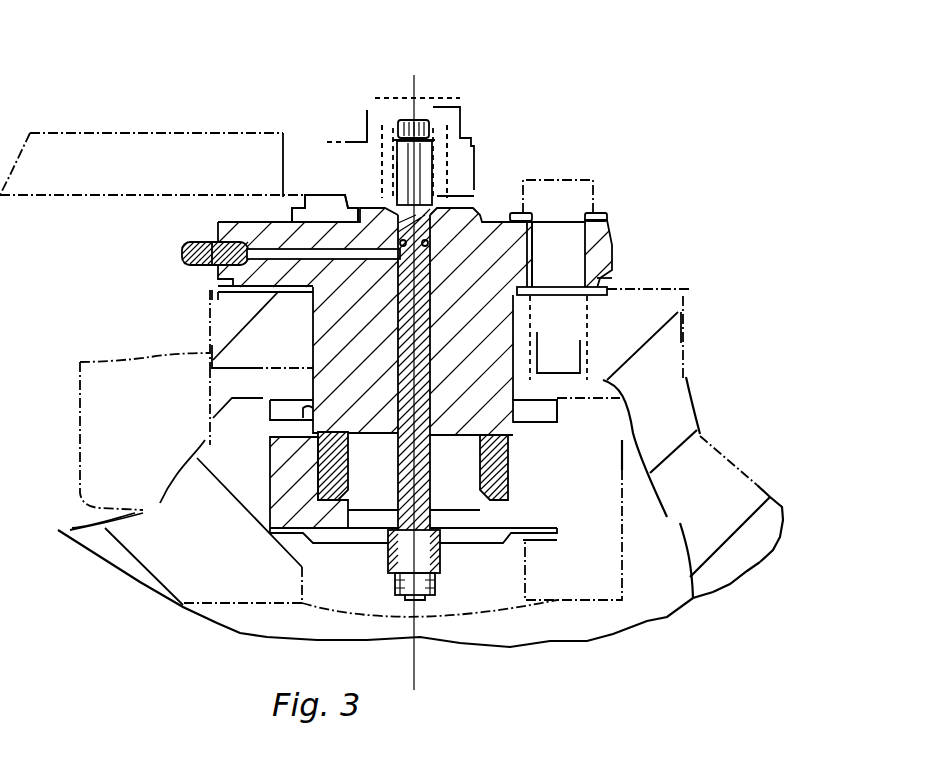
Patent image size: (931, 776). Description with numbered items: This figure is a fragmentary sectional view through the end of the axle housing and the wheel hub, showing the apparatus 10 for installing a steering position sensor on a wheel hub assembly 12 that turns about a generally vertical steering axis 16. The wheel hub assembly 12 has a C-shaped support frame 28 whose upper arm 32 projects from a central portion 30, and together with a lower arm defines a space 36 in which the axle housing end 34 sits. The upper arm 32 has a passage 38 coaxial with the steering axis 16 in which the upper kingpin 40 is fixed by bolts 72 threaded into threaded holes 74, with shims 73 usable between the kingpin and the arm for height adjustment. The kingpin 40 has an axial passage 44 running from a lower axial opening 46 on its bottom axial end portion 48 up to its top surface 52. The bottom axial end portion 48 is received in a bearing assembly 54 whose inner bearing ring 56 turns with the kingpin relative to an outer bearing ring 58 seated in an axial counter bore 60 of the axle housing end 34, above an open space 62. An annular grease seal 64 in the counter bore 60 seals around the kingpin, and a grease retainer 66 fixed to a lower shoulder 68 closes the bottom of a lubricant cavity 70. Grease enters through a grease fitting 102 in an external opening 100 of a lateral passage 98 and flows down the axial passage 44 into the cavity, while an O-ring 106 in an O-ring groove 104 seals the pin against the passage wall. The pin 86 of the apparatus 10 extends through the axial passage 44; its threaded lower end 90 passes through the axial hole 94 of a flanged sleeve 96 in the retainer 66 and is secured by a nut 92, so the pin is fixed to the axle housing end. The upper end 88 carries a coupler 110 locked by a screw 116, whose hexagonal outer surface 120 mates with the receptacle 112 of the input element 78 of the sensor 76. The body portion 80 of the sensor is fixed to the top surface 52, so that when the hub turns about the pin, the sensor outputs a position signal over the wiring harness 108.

The apparatus 10 is at (472, 120).
The wheel hub assembly 12 is at (690, 289).
The steering axis 16 is at (416, 78).
The support frame 28 is at (684, 329).
The central portion 30 is at (743, 462).
The upper arm 32 is at (212, 300).
The axle housing end 34 is at (78, 526).
The space 36 is at (230, 384).
The passage 38 is at (312, 343).
The upper kingpin 40 is at (616, 225).
The axial passage 44 is at (533, 268).
The lower axial opening 46 is at (392, 511).
The bottom axial end portion 48 is at (470, 542).
The top surface 52 is at (356, 205).
The bearing assembly 54 is at (262, 506).
The inner bearing ring 56 is at (270, 456).
The outer bearing ring 58 is at (262, 440).
The axial counter bore 60 is at (545, 488).
The open space 62 is at (283, 627).
The annular grease seal 64 is at (558, 412).
The grease retainer 66 is at (541, 545).
The lower shoulder 68 is at (558, 514).
The lubricant cavity 70 is at (320, 540).
The bolts 72 is at (587, 182).
The shims 73 is at (606, 280).
The threaded holes 74 is at (598, 346).
The sensor 76 is at (438, 118).
The input element 78 is at (392, 127).
The body portion 80 is at (367, 133).
The pin 86 is at (432, 318).
The upper end 88 is at (434, 205).
The lower end 90 is at (395, 574).
The nut 92 is at (441, 562).
The axial hole 94 is at (425, 510).
The flanged sleeve 96 is at (448, 545).
The lateral passage 98 is at (268, 251).
The external opening 100 is at (215, 244).
The grease fitting 102 is at (182, 252).
The O-ring groove 104 is at (400, 243).
The O-ring 106 is at (428, 243).
The wiring harness 108 is at (88, 133).
The coupler 110 is at (408, 120).
The receptacle 112 is at (443, 120).
The screw 116 is at (392, 128).
The hexagonal outer surface 120 is at (397, 167).